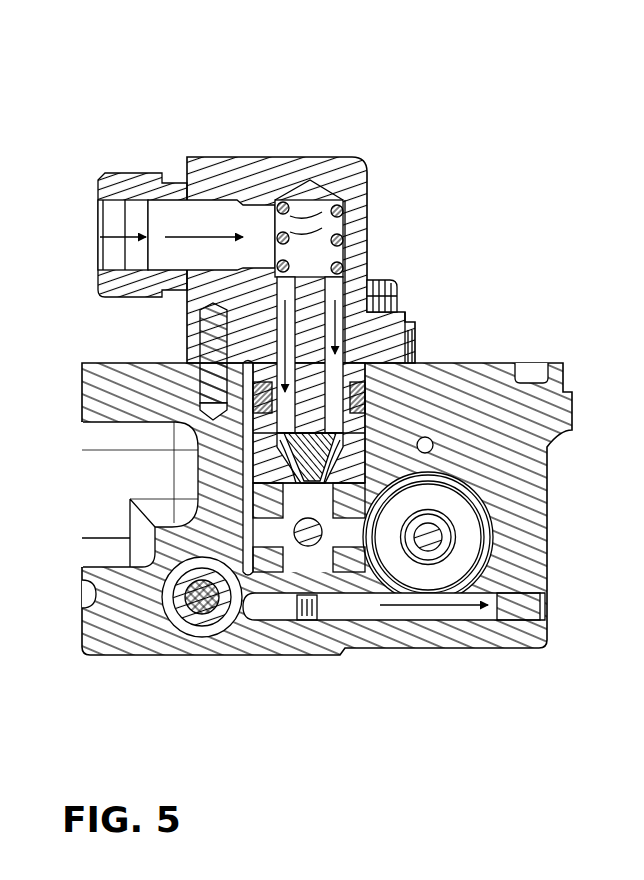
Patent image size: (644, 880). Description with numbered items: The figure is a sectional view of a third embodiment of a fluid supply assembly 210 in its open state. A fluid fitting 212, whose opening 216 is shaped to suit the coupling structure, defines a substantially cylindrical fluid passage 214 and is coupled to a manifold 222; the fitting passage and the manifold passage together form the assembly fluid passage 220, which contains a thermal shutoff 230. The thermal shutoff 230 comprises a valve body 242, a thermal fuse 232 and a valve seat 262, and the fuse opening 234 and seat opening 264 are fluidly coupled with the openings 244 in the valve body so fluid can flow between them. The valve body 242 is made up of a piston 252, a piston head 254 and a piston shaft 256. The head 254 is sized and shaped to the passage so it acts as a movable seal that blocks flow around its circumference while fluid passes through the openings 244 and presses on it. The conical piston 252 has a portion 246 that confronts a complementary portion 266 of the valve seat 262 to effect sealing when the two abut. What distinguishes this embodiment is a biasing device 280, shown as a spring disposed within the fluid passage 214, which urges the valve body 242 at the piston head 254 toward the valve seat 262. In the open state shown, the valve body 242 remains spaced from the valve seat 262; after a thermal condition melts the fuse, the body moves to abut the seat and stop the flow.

The fluid supply assembly 210 is at (325, 379).
The fluid fitting 212 is at (215, 167).
The fluid passage 214 is at (253, 227).
The opening 216 is at (98, 215).
The assembly fluid passage 220 is at (440, 363).
The manifold 222 is at (148, 612).
The thermal shutoff 230 is at (205, 452).
The thermal fuse 232 is at (305, 490).
The opening 234 is at (340, 500).
The valve body 242 is at (417, 337).
The openings 244 is at (343, 210).
The portion 246 is at (318, 515).
The piston 252 is at (205, 480).
The piston head 254 is at (310, 300).
The piston shaft 256 is at (388, 302).
The valve seat 262 is at (262, 565).
The opening 264 is at (312, 548).
The complementary portion 266 is at (278, 548).
The biasing device 280 is at (322, 212).